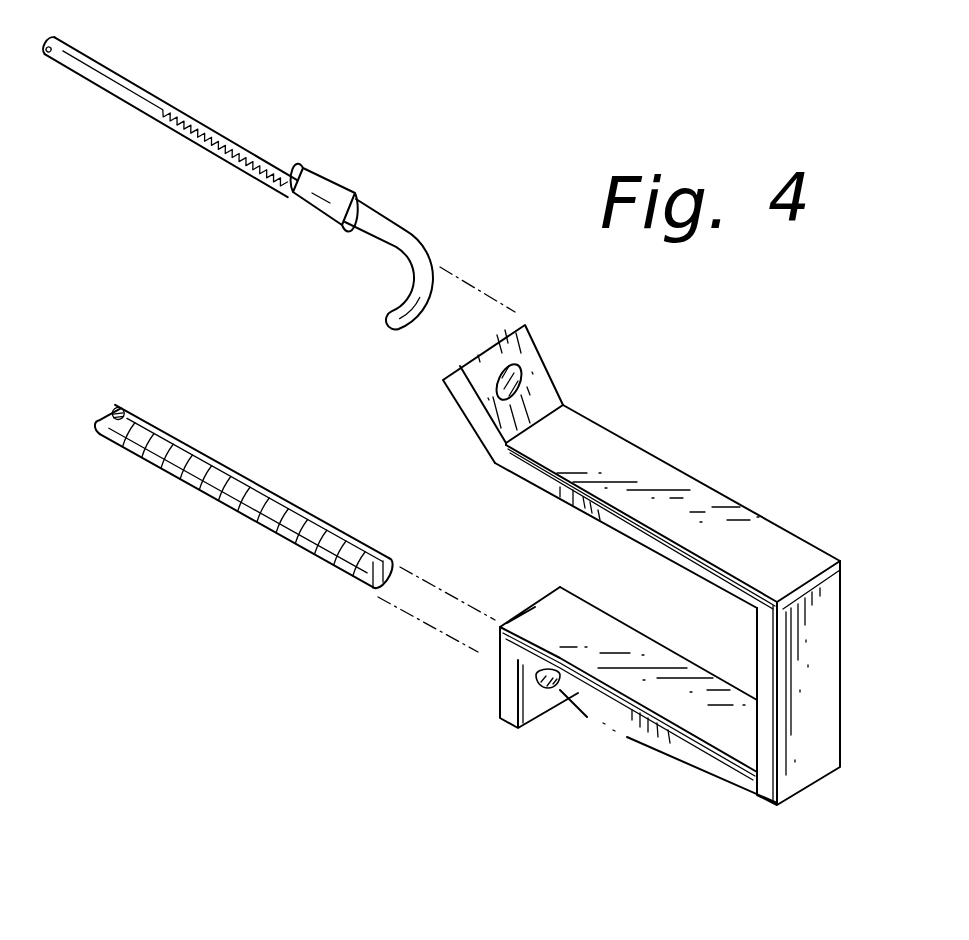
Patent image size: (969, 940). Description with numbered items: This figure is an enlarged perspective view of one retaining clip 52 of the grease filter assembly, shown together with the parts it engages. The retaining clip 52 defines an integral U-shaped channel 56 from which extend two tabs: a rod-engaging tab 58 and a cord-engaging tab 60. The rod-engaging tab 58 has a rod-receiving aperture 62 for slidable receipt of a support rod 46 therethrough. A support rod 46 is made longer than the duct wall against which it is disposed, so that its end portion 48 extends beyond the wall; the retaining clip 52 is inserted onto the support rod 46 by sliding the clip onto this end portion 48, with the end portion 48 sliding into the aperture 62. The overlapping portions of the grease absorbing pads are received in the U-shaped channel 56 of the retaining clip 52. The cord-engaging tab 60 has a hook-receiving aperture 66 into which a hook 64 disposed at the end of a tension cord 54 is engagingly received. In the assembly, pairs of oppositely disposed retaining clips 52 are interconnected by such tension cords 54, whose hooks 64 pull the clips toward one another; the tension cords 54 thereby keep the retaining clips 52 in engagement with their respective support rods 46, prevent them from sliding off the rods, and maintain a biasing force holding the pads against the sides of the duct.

The support rod 46 is at (150, 467).
The end portion 48 is at (233, 510).
The retaining clip 52 is at (782, 548).
The tension cord 54 is at (227, 140).
The U-shaped channel 56 is at (705, 620).
The rod-engaging tab 58 is at (540, 703).
The cord-engaging tab 60 is at (537, 393).
The rod-receiving aperture 62 is at (540, 680).
The hook 64 is at (395, 237).
The hook-receiving aperture 66 is at (497, 387).